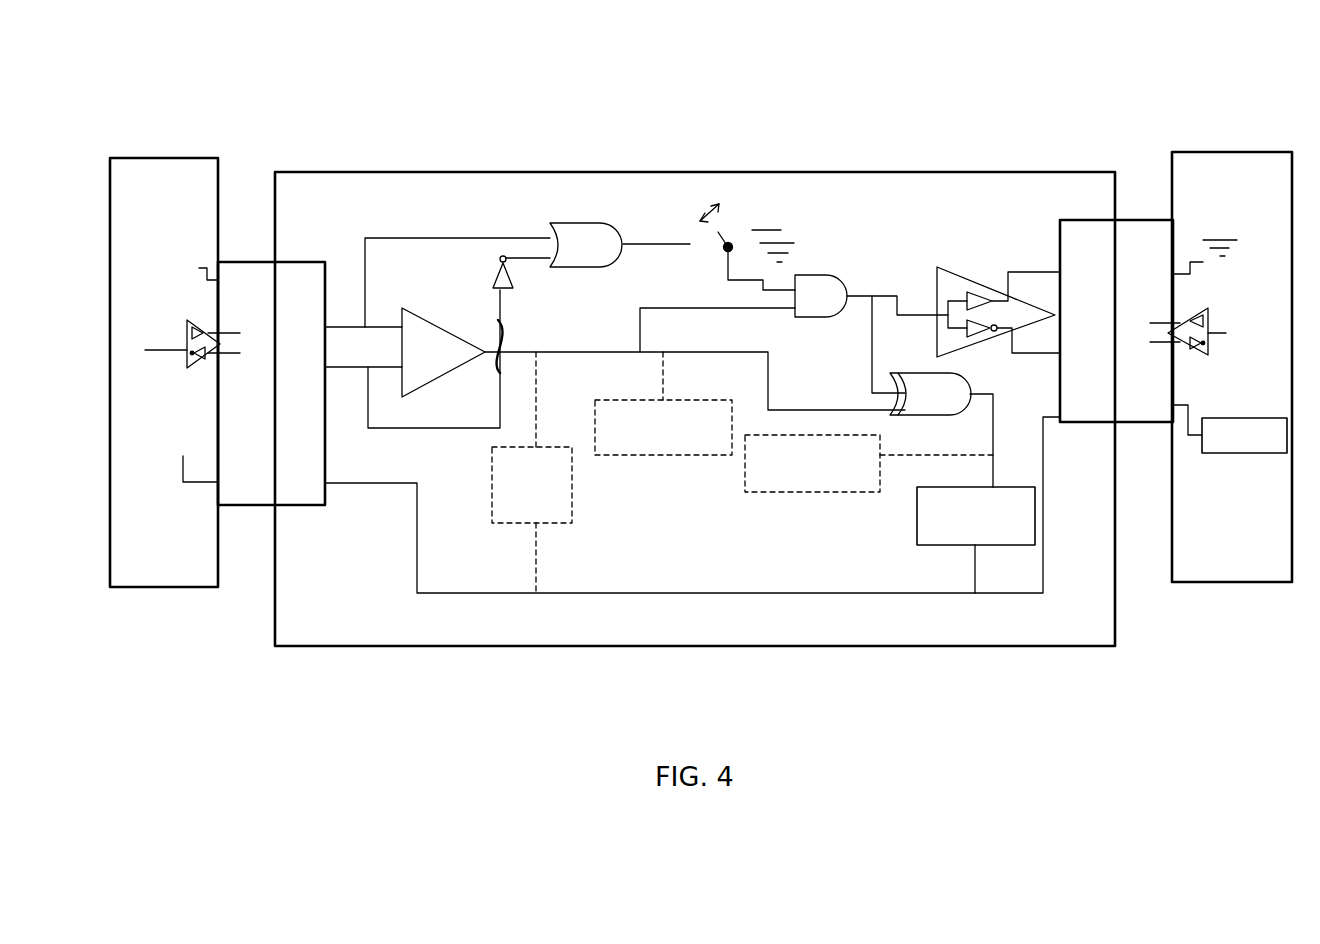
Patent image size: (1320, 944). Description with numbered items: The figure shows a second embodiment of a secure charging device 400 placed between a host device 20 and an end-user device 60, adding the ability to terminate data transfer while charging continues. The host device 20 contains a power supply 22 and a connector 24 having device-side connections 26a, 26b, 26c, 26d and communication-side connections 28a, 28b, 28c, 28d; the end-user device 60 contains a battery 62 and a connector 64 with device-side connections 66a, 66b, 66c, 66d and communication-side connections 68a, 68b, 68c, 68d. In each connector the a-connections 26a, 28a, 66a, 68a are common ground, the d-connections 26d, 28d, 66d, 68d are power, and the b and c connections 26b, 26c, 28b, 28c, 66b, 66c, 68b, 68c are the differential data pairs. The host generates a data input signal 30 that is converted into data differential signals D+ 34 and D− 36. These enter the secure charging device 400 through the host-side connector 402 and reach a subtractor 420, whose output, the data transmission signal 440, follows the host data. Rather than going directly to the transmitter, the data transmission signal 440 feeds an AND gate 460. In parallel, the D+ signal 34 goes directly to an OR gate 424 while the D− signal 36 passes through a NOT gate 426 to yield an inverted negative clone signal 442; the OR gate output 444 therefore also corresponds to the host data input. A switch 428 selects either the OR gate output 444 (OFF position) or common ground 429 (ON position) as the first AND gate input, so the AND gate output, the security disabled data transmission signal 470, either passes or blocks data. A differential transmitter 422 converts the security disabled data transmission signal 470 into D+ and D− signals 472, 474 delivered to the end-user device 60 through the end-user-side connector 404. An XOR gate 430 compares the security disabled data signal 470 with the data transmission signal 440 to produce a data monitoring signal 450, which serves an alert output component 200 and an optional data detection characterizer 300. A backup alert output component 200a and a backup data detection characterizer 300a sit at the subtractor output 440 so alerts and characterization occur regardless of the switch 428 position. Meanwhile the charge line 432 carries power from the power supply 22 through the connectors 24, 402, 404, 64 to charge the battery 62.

The host device 20 is at (125, 587).
The power supply 22 is at (147, 492).
The connector 24 is at (218, 495).
The device-side common ground connector 26a is at (231, 272).
The device-side differential data connector 26b is at (244, 330).
The device-side differential data connector 26c is at (229, 500).
The device-side power connector 26d is at (243, 375).
The communication-side common ground connector 28a is at (265, 272).
The communication-side differential data connector 28b is at (259, 330).
The communication-side differential data connector 28c is at (263, 375).
The communication-side power connector 28d is at (266, 500).
The data input signal 30 is at (162, 351).
The data differential signal (D+) 34 is at (207, 325).
The data differential signal (D−) 36 is at (218, 358).
The end-user device 60 is at (1273, 582).
The battery 62 is at (1245, 453).
The connector 64 is at (1163, 418).
The device-side common ground connector 66a is at (1163, 317).
The device-side differential data connector 66b is at (1136, 320).
The device-side differential data connector 66c is at (1160, 366).
The device-side power connector 66d is at (1160, 418).
The communication-side common ground connector 68a is at (1120, 220).
The communication-side differential data connector 68b is at (1133, 270).
The communication-side differential data connector 68c is at (1140, 366).
The communication-side power connector 68d is at (1122, 423).
The alert output component 200 is at (917, 520).
The backup alert output component 200a is at (575, 505).
The data detection characterizer 300 is at (765, 493).
The backup data detection characterizer 300a is at (650, 457).
The secure charging device 400 is at (485, 648).
The host-side connector 402 is at (302, 505).
The end-user-side connector 404 is at (1090, 422).
The subtractor 420 is at (442, 318).
The differential transmitter 422 is at (948, 267).
The OR gate 424 is at (575, 223).
The NOT gate 426 is at (493, 280).
The switch 428 is at (708, 205).
The common ground 429 is at (793, 236).
The XOR gate 430 is at (904, 373).
The charge line 432 is at (728, 594).
The data transmission signal 440 is at (585, 352).
The inverted negative clone signal 442 is at (535, 330).
The OR gate output 444 is at (645, 243).
The data monitoring signal 450 is at (993, 417).
The AND gate 460 is at (806, 317).
The security disabled data transmission signal 470 is at (875, 296).
The D+ signal 472 is at (1003, 272).
The D− signal 474 is at (1010, 353).